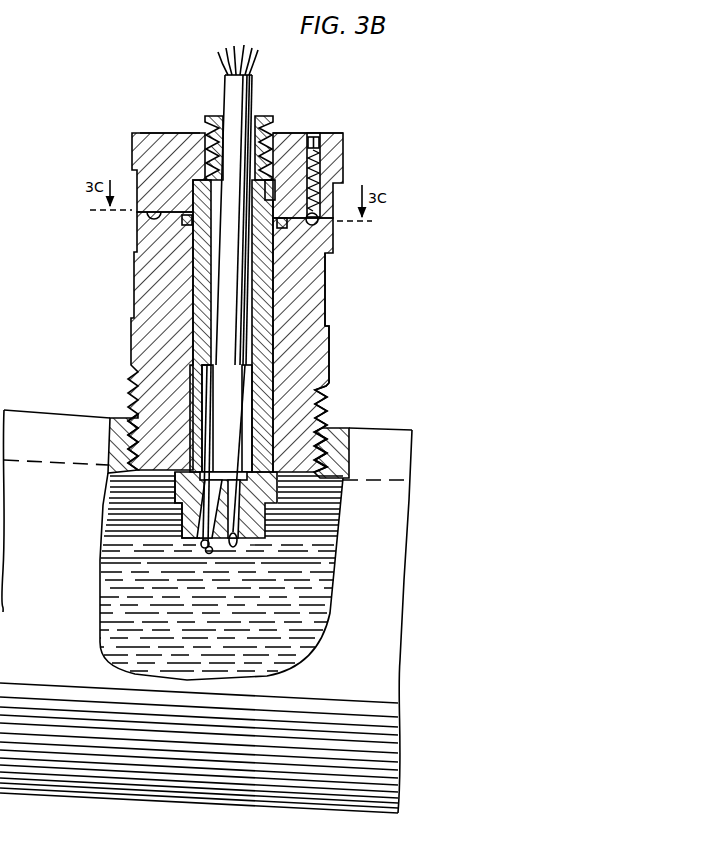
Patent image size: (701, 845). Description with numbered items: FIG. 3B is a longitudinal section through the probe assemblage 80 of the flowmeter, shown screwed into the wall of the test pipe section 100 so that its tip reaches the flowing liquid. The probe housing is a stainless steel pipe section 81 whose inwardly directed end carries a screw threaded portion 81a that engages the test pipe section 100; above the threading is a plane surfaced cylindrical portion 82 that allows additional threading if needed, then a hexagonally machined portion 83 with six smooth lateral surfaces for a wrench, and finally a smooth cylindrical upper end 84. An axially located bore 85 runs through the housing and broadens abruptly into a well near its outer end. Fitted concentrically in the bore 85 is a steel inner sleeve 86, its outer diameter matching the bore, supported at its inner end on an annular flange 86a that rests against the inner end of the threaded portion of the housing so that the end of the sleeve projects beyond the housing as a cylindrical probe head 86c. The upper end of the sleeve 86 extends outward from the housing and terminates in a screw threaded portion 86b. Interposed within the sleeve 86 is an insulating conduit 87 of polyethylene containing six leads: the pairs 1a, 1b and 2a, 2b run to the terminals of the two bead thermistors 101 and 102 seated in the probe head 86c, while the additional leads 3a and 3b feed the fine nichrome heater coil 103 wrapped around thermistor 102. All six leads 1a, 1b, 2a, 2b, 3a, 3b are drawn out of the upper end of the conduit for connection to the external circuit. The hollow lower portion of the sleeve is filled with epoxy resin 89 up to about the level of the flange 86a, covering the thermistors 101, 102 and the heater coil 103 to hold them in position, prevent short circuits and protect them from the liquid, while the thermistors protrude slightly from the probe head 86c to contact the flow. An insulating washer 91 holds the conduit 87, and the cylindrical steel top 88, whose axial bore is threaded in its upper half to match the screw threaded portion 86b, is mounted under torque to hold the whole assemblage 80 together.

The lead 1a is at (254, 64).
The lead 1b is at (253, 55).
The lead 2a is at (246, 60).
The lead 2b is at (226, 67).
The lead 3a is at (235, 60).
The lead 3b is at (228, 60).
The probe assemblage 80 is at (300, 134).
The pipe section 81 is at (330, 316).
The screw threaded portion 81a is at (331, 400).
The plane surfaced cylindrical portion 82 is at (329, 339).
The hexagonally machined portion 83 is at (328, 298).
The upper end 84 is at (333, 250).
The bore 85 is at (188, 270).
The inner sleeve 86 is at (196, 302).
The annular flange 86a is at (278, 490).
The screw threaded portion 86b is at (203, 131).
The probe head 86c is at (168, 522).
The insulating conduit 87 is at (165, 132).
The steel top 88 is at (132, 144).
The epoxy resin 89 is at (268, 519).
The insulating washer 91 is at (182, 220).
The test pipe section 100 is at (67, 420).
The bead thermistor 101 is at (237, 540).
The bead thermistor 102 is at (210, 549).
The heater coil 103 is at (200, 548).